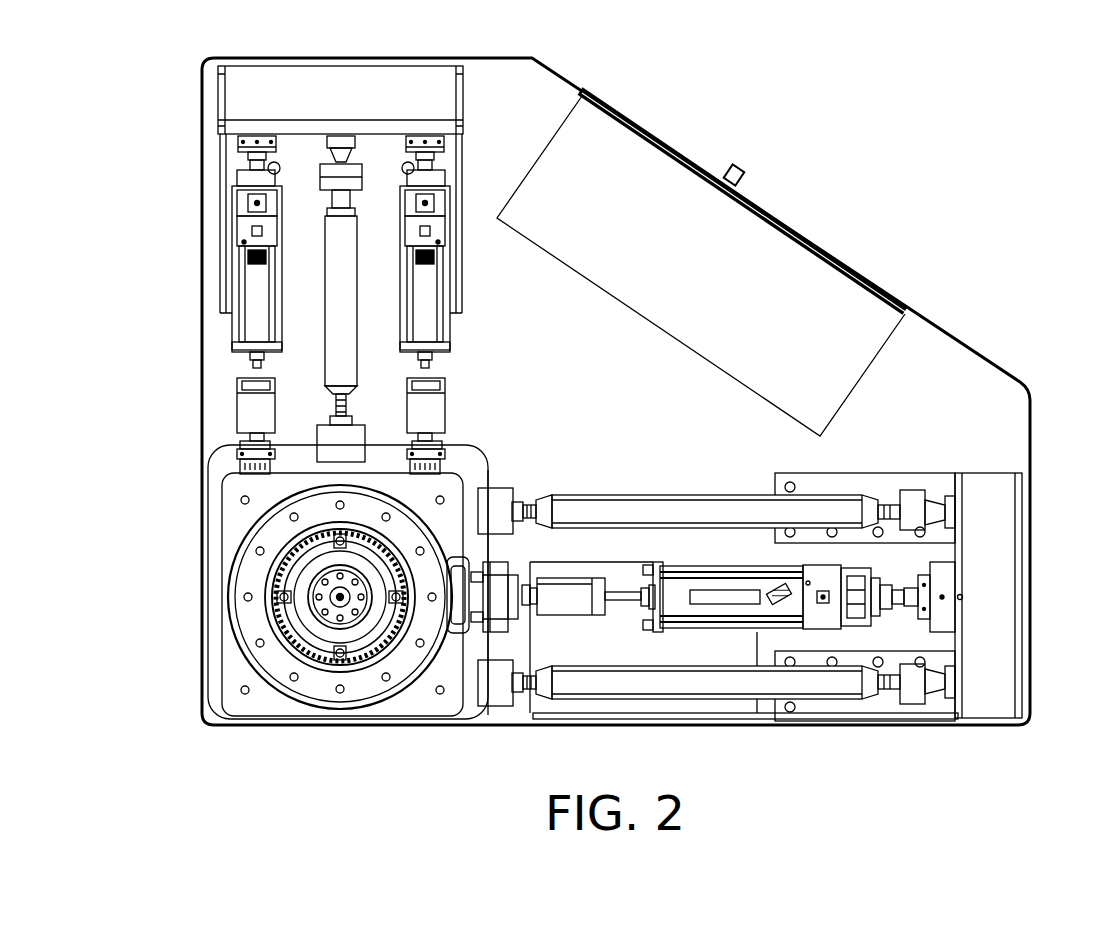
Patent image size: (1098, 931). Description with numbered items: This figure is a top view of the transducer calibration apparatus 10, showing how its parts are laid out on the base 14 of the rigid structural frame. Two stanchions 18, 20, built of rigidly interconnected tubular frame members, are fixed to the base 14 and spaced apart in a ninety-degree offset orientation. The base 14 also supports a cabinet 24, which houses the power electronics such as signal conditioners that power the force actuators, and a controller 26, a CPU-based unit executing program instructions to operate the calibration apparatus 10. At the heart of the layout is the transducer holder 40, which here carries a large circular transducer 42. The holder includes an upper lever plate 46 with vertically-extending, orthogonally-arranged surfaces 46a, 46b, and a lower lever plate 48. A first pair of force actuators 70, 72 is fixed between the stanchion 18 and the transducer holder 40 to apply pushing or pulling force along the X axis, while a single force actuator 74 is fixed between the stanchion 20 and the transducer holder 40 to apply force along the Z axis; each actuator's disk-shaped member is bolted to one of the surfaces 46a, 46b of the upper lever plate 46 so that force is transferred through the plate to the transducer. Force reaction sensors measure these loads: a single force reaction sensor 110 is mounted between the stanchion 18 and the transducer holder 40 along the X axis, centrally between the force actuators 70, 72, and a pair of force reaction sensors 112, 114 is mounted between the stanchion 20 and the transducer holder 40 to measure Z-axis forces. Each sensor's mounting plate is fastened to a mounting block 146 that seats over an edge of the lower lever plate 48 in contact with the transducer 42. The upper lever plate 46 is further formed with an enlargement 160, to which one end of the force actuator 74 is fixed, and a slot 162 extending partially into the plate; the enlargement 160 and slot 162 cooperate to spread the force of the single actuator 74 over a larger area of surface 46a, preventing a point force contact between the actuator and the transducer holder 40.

The transducer calibration apparatus 10 is at (985, 182).
The base 14 is at (210, 370).
The stanchion 18 is at (232, 82).
The stanchion 20 is at (1006, 612).
The cabinet 24 is at (810, 293).
The controller 26 is at (734, 703).
The transducer holder 40 is at (262, 597).
The transducer 42 is at (335, 655).
The upper lever plate 46 is at (222, 503).
The surface 46a is at (472, 540).
The surface 46b is at (310, 472).
The lower lever plate 48 is at (212, 638).
The force actuator 70 is at (245, 211).
The force actuator 72 is at (414, 300).
The force actuator 74 is at (862, 590).
The force reaction sensor 110 is at (337, 258).
The force reaction sensor 112 is at (862, 507).
The force reaction sensor 114 is at (861, 685).
The mounting block 146 is at (343, 440).
The enlargement 160 is at (477, 595).
The slot 162 is at (446, 635).